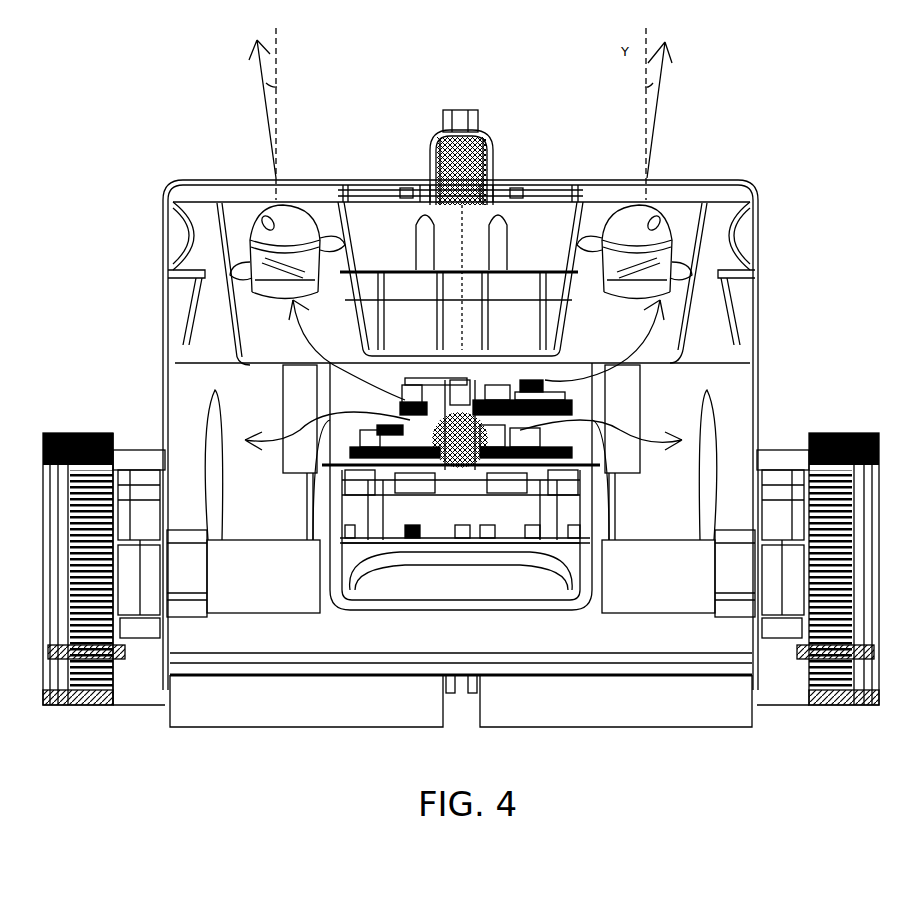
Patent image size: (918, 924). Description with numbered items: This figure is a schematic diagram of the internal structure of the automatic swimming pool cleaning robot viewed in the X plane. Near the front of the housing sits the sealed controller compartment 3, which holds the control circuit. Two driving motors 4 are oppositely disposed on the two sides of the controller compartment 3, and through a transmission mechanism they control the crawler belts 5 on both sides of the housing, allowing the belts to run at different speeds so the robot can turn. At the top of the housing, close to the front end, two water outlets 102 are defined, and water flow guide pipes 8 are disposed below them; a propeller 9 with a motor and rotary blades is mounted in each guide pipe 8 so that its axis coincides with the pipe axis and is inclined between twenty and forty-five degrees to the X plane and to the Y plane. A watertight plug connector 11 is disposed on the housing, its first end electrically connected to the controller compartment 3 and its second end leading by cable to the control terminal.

The water outlet 102 is at (688, 178).
The watertight plug connector 11 is at (458, 110).
The propeller 9 is at (633, 223).
The water flow guide pipe 8 is at (697, 280).
The crawler belts 5 is at (80, 435).
The driving motor 4 is at (258, 600).
The controller compartment 3 is at (403, 582).